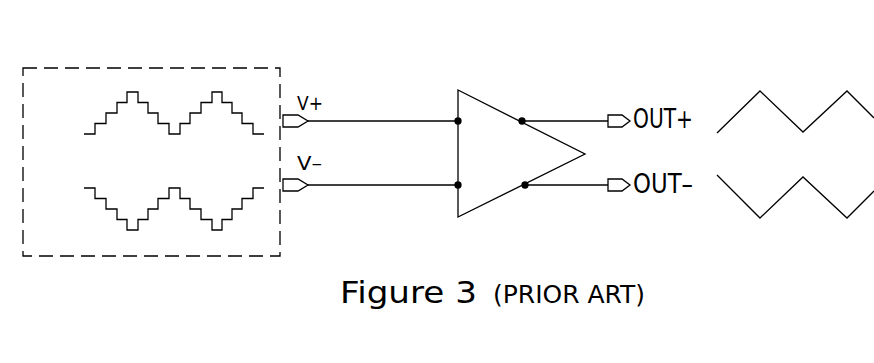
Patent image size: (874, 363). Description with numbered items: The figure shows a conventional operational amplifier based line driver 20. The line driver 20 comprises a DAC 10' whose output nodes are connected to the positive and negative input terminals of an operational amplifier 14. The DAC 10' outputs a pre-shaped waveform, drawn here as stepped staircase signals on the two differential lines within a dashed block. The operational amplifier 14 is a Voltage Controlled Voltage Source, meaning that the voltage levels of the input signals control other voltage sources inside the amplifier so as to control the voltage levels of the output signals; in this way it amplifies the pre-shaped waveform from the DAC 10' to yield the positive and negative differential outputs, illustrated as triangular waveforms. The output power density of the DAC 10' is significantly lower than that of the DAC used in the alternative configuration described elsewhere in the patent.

The DAC 10' is at (151, 139).
The operational amplifier 14 is at (485, 102).
The line driver 20 is at (634, 53).